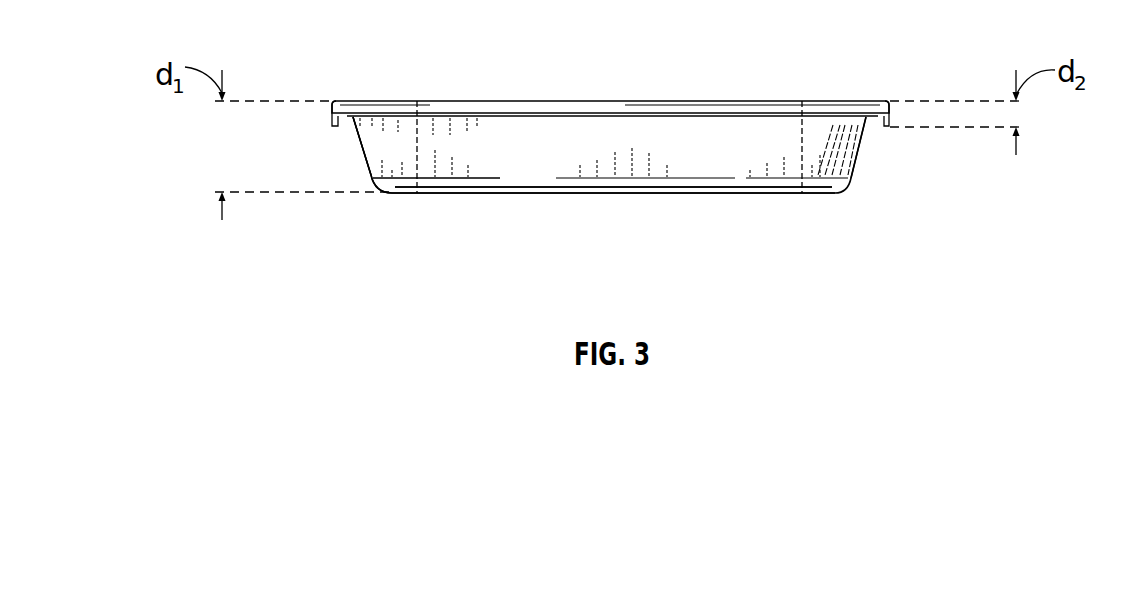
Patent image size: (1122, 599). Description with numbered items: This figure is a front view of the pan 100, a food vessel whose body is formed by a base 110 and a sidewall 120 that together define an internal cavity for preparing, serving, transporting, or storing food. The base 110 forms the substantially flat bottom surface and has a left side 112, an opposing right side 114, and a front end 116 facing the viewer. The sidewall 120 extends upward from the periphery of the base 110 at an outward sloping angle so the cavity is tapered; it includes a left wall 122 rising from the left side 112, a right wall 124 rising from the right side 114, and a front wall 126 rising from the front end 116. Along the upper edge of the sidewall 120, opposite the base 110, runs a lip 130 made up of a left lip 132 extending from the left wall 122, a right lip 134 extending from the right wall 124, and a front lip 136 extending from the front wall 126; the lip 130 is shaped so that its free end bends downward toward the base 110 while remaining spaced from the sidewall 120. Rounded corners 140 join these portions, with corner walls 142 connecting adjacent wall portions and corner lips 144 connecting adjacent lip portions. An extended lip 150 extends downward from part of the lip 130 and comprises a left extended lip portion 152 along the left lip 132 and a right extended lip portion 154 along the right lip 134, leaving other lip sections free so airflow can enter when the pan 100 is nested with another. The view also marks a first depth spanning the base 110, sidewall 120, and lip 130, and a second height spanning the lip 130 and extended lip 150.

The pan 100 is at (336, 30).
The base 110 is at (720, 195).
The left side 112 is at (336, 204).
The right side 114 is at (870, 202).
The front end 116 is at (657, 185).
The sidewall 120 is at (522, 166).
The left wall 122 is at (363, 157).
The right wall 124 is at (856, 172).
The front wall 126 is at (452, 178).
The lip 130 is at (767, 88).
The left lip 132 is at (333, 103).
The right lip 134 is at (888, 100).
The front lip 136 is at (660, 106).
The corners 140 is at (410, 183).
The corner walls 142 is at (375, 183).
The corner lips 144 is at (390, 106).
The extended lip 150 is at (872, 140).
The left extended lip portion 152 is at (333, 124).
The right extended lip portion 154 is at (892, 125).